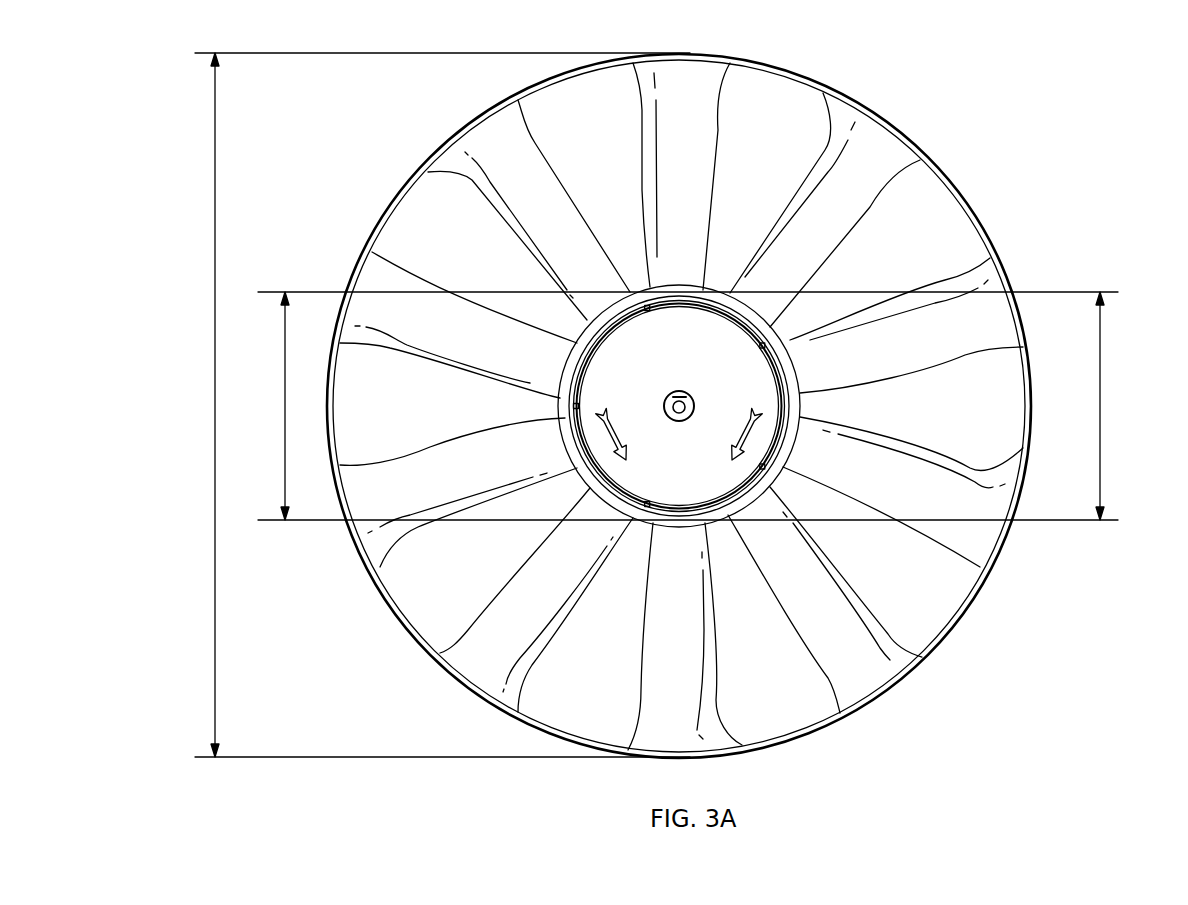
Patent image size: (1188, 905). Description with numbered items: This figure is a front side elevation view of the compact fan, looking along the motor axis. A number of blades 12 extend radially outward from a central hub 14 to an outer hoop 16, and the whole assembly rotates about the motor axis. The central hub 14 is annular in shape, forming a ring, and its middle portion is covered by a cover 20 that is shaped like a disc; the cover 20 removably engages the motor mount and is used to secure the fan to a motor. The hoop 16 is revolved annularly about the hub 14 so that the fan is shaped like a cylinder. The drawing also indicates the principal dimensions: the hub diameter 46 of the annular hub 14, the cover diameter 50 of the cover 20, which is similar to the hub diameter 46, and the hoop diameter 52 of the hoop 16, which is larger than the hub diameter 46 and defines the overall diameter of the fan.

The blades 12 is at (860, 165).
The central hub 14 is at (797, 403).
The outer hoop 16 is at (962, 190).
The cover 20 is at (740, 363).
The hub diameter 46 is at (285, 393).
The cover diameter 50 is at (1100, 410).
The hoop diameter 52 is at (215, 468).